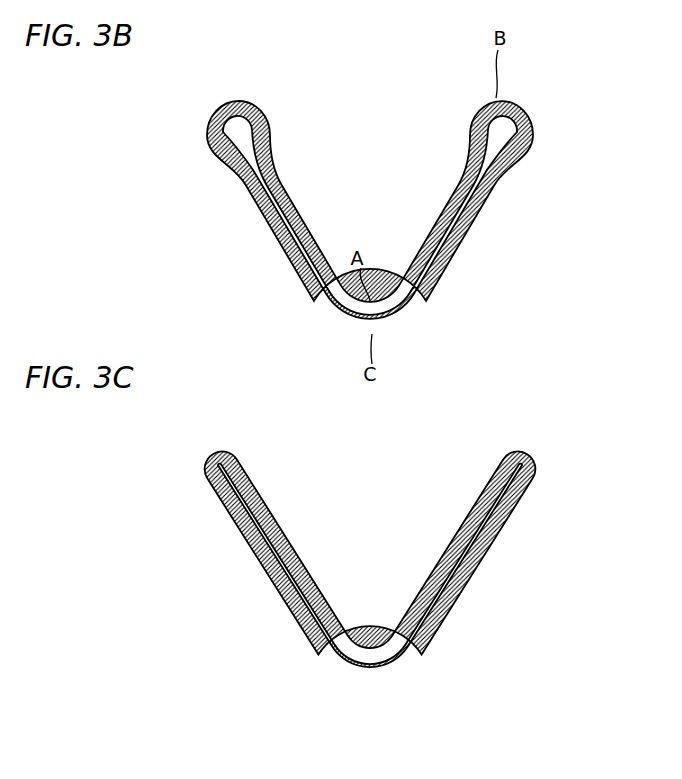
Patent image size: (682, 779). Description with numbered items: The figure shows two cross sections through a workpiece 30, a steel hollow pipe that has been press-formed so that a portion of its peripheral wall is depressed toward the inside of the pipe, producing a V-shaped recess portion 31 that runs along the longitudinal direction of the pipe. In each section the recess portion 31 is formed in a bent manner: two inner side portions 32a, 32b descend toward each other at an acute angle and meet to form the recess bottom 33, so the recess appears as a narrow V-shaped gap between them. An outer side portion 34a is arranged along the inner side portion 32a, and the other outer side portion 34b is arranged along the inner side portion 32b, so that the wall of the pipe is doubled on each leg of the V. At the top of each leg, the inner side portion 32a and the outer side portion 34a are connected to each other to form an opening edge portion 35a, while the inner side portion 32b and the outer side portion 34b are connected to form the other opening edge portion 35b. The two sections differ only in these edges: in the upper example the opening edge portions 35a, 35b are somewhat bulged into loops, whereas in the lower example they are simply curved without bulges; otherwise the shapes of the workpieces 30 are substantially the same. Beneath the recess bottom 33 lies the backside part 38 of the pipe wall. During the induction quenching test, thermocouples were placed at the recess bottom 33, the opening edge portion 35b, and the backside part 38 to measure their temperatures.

In FIG. 3B, the workpiece 30 is at (562, 33).
In FIG. 3C, the workpiece 30 is at (565, 382).
In FIG. 3B, the recess portion 31 is at (305, 158).
In FIG. 3C, the recess portion 31 is at (305, 510).
In FIG. 3B, the inner side portion 32a is at (296, 207).
In FIG. 3C, the inner side portion 32a is at (299, 556).
In FIG. 3B, the inner side portion 32b is at (444, 207).
In FIG. 3C, the inner side portion 32b is at (441, 556).
In FIG. 3B, the recess bottom 33 is at (379, 289).
In FIG. 3C, the recess bottom 33 is at (379, 628).
In FIG. 3B, the outer side portion 34a is at (281, 246).
In FIG. 3C, the outer side portion 34a is at (282, 598).
In FIG. 3B, the outer side portion 34b is at (459, 247).
In FIG. 3C, the outer side portion 34b is at (458, 598).
In FIG. 3B, the opening edge portion 35a is at (220, 106).
In FIG. 3C, the opening edge portion 35a is at (213, 456).
In FIG. 3B, the opening edge portion 35b is at (521, 100).
In FIG. 3C, the opening edge portion 35b is at (528, 456).
In FIG. 3B, the backside part 38 is at (389, 349).
In FIG. 3C, the backside part 38 is at (389, 697).